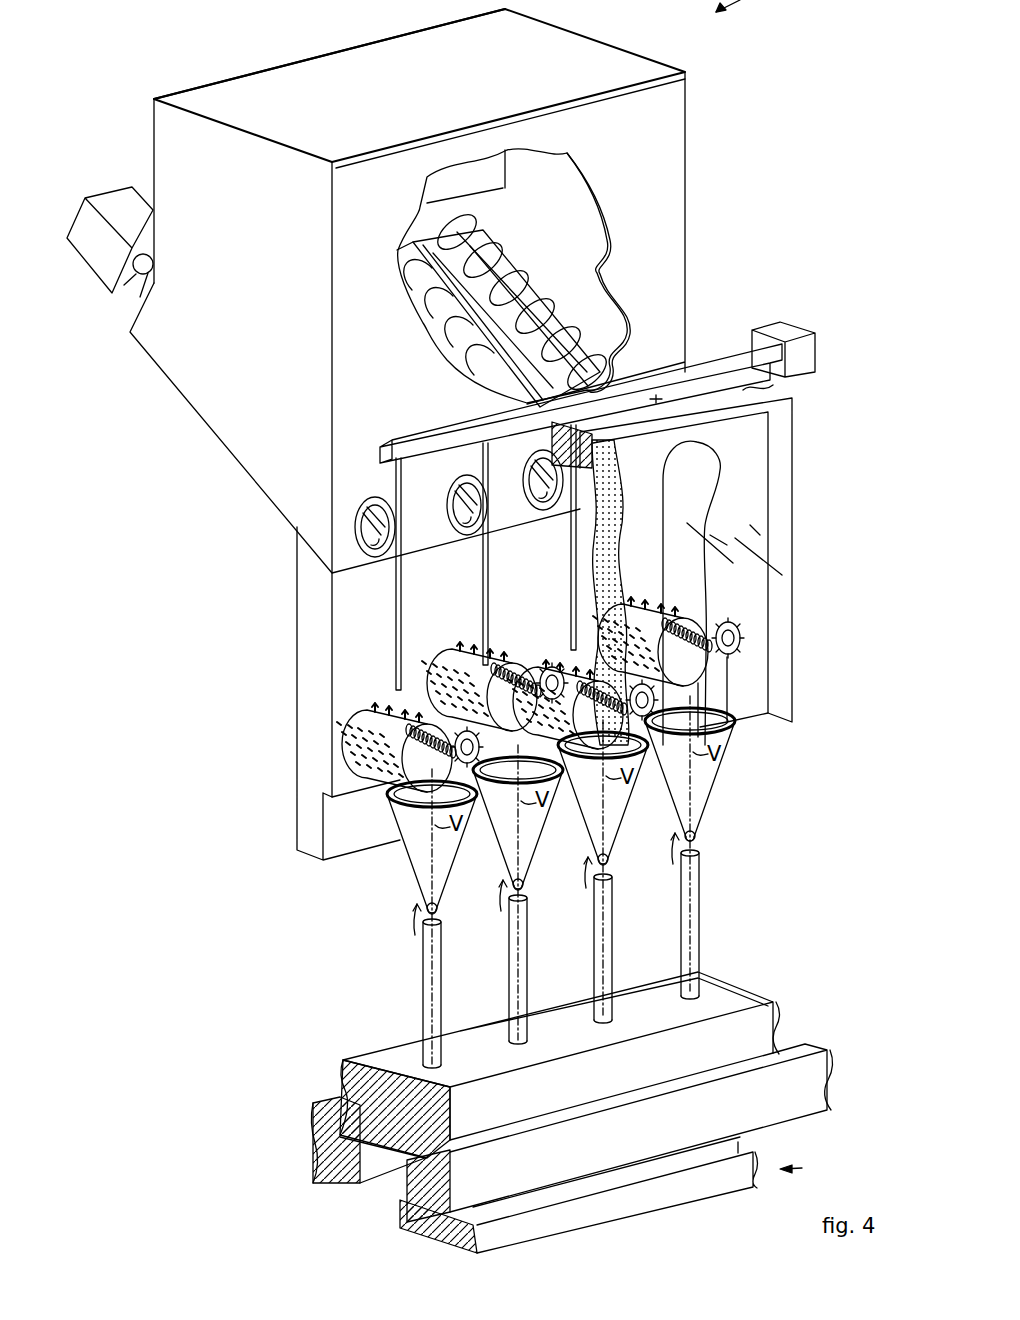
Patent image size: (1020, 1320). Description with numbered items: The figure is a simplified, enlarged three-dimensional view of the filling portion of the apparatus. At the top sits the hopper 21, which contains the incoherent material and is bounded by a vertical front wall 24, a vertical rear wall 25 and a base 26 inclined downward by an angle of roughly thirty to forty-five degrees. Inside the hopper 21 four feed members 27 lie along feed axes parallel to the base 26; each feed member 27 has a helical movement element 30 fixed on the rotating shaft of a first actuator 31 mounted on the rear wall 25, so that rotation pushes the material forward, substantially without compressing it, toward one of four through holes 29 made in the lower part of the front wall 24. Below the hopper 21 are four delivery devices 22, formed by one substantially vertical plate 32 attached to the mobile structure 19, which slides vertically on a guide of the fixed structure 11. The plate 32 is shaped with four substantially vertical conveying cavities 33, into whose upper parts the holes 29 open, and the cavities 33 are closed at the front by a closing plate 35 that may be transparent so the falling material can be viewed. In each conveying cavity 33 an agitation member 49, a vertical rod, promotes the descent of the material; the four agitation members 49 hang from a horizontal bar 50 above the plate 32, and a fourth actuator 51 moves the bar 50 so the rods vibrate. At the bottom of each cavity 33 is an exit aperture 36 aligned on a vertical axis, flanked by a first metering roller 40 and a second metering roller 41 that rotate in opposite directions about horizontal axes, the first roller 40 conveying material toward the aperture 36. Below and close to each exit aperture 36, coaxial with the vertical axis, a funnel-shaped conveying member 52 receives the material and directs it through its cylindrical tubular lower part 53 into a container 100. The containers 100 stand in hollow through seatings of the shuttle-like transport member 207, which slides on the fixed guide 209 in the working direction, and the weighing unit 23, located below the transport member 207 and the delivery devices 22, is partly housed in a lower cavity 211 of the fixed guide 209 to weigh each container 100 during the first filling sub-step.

The hopper 21 is at (683, 118).
The rear wall 25 is at (331, 52).
The front wall 24 is at (448, 130).
The first actuator 31 is at (112, 196).
The base 26 is at (197, 425).
The feed member 27 is at (516, 246).
The movement element 30 is at (548, 311).
The through hole 29 is at (373, 499).
The agitation member 49 is at (401, 610).
The horizontal bar 50 is at (710, 359).
The fourth actuator 51 is at (790, 329).
The plate 32 is at (776, 385).
The closing plate 35 is at (793, 468).
The conveying cavity 33 is at (623, 478).
The first metering roller 40 is at (451, 663).
The second metering roller 41 is at (553, 669).
The exit aperture 36 is at (728, 705).
The mobile structure 19 is at (298, 768).
The conveying member 52 is at (458, 863).
The lower part 53 is at (446, 898).
The delivery device 22 is at (537, 894).
The container 100 is at (442, 984).
The transport member 207 is at (370, 1058).
The lower cavity 211 is at (363, 1185).
The fixed guide 209 is at (829, 1072).
The fixed structure 11 is at (668, 1195).
The weighing unit 23 is at (806, 1169).